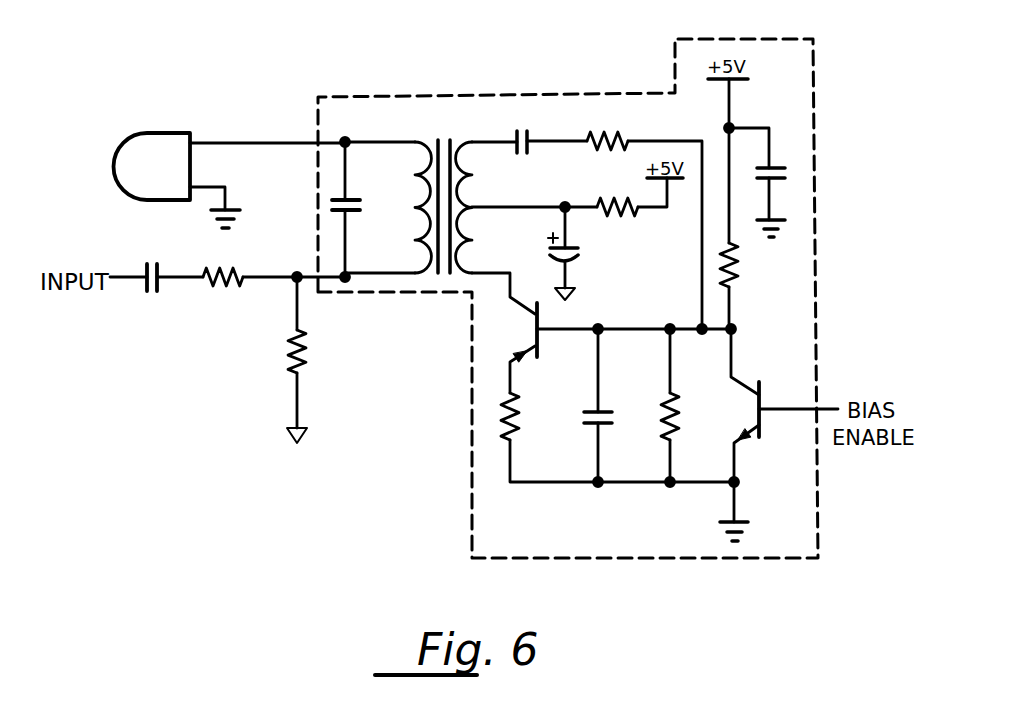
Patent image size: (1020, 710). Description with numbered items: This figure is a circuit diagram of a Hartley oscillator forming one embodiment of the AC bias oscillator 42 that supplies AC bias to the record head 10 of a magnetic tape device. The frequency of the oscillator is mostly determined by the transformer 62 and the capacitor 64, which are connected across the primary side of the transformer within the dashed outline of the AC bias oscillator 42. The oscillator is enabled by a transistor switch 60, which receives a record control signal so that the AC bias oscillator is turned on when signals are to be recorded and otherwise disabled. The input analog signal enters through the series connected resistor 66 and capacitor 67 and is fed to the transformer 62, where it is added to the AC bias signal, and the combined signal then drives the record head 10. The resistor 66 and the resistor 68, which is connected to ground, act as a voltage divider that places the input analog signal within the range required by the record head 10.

The record head 10 is at (160, 133).
The AC bias oscillator 42 is at (815, 92).
The transistor switch 60 is at (760, 389).
The transformer 62 is at (437, 138).
The capacitor 64 is at (352, 200).
The resistor 66 is at (232, 268).
The capacitor 67 is at (158, 269).
The resistor 68 is at (304, 352).